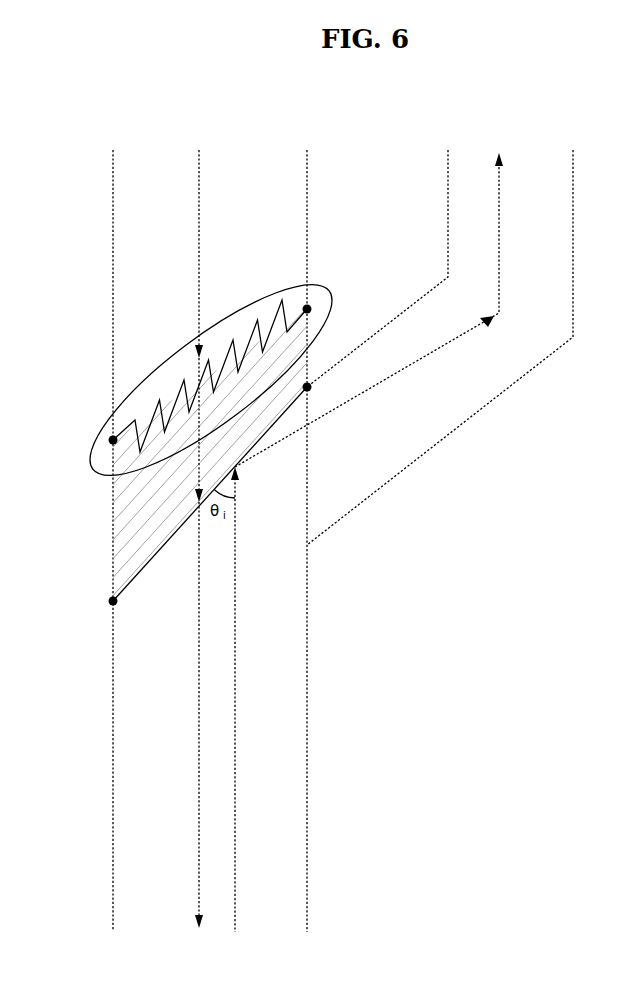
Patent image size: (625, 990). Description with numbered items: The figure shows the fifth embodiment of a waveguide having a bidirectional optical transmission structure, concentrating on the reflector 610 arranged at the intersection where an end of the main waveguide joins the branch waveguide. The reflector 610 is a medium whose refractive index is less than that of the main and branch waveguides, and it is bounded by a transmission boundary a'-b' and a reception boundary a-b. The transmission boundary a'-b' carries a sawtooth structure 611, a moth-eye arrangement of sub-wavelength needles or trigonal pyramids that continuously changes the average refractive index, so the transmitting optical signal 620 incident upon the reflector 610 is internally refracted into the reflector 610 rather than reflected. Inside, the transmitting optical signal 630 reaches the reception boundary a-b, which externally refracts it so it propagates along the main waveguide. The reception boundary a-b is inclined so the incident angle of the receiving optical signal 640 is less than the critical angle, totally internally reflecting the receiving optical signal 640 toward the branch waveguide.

The reflector 610 is at (128, 527).
The sawtooth structure 611 is at (95, 443).
The transmitting optical signal 620 is at (200, 258).
The transmitting optical signal 630 is at (198, 456).
The receiving optical signal 640 is at (235, 783).